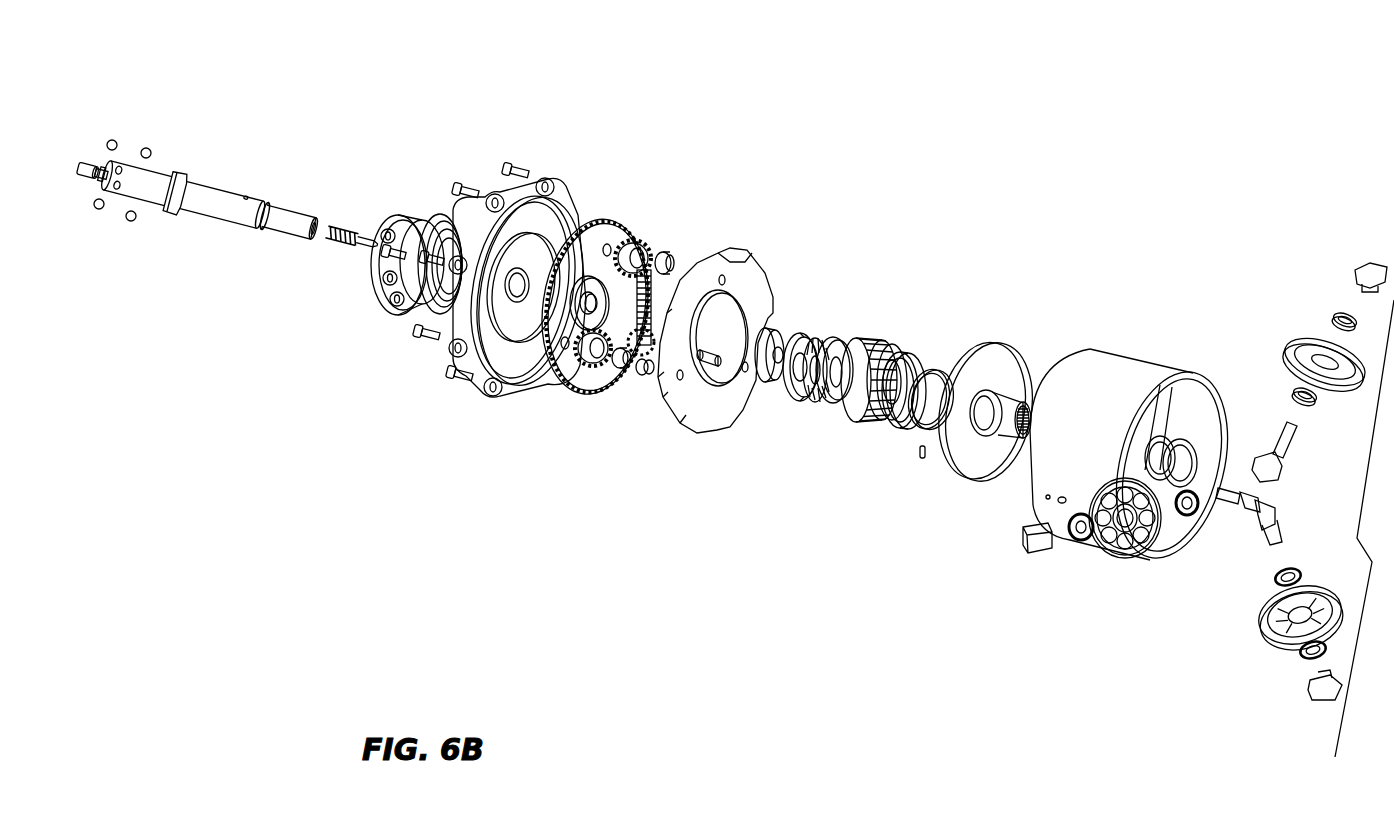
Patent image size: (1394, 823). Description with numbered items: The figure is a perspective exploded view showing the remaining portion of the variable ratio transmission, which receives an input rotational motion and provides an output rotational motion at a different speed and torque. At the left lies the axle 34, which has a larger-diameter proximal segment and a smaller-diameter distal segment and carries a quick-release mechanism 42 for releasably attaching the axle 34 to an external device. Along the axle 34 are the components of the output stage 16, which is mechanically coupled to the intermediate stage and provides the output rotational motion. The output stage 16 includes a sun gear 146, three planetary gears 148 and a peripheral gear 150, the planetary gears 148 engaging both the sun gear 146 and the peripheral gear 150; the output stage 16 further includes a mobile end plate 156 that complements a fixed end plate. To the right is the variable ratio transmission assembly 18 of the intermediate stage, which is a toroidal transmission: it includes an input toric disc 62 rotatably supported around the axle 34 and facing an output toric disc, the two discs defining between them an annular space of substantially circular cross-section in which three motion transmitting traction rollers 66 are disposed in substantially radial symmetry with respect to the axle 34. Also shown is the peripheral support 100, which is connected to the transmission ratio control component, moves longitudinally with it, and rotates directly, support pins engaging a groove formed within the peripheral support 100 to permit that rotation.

The quick-release mechanism 42 is at (149, 146).
The axle 34 is at (210, 190).
The mobile end plate 156 is at (524, 198).
The output stage 16 is at (606, 216).
The peripheral gear 150 is at (641, 240).
The planetary gears 148 is at (590, 366).
The sun gear 146 is at (654, 376).
The variable ratio transmission assembly 18 is at (1004, 336).
The input toric disc 62 is at (990, 481).
The peripheral support 100 is at (1133, 368).
The motion transmitting traction rollers 66 is at (1290, 336).